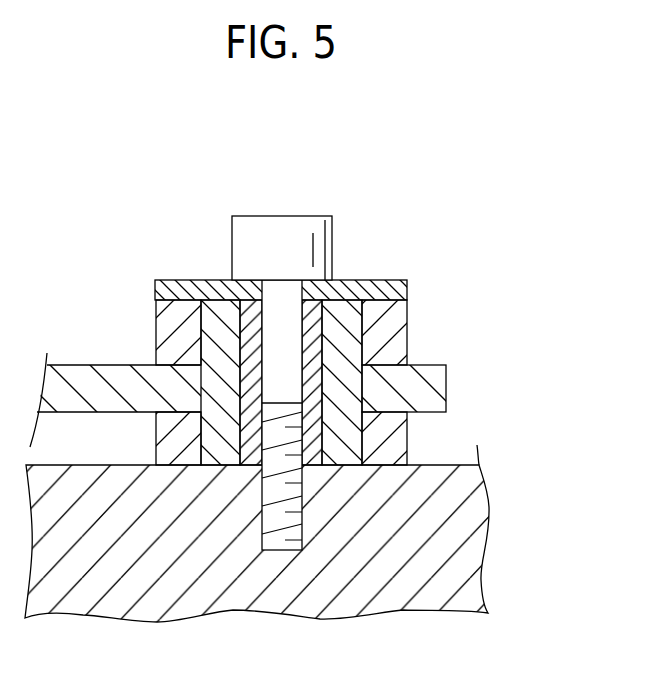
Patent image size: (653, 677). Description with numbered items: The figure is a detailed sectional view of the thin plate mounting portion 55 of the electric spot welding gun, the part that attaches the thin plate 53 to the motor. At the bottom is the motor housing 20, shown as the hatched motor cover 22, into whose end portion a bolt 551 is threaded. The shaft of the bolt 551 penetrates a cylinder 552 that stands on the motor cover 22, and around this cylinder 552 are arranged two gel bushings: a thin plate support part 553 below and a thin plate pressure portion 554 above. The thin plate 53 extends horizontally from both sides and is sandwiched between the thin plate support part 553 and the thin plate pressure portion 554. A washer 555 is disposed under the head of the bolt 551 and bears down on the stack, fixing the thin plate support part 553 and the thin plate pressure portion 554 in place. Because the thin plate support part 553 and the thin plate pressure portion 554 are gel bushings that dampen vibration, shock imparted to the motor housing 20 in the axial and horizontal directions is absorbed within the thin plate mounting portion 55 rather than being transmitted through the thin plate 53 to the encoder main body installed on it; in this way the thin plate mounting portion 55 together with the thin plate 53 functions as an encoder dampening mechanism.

The motor housing 20 is at (314, 533).
The motor cover 22 is at (463, 534).
The thin plate 53 is at (437, 392).
The thin plate mounting portion 55 is at (296, 346).
The bolt 551 is at (297, 228).
The cylinder 552 is at (317, 322).
The thin plate support part 553 is at (390, 442).
The thin plate pressure portion 554 is at (167, 332).
The washer 555 is at (363, 281).